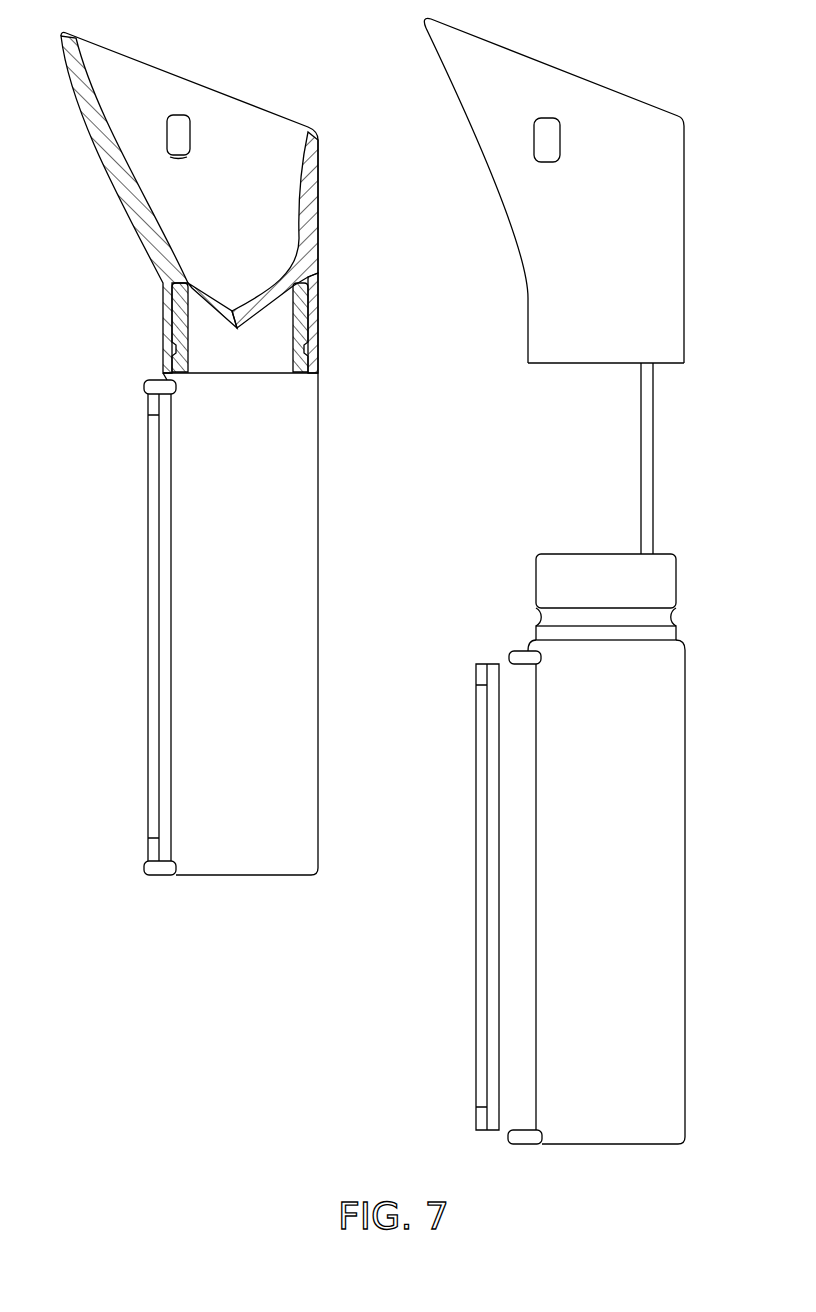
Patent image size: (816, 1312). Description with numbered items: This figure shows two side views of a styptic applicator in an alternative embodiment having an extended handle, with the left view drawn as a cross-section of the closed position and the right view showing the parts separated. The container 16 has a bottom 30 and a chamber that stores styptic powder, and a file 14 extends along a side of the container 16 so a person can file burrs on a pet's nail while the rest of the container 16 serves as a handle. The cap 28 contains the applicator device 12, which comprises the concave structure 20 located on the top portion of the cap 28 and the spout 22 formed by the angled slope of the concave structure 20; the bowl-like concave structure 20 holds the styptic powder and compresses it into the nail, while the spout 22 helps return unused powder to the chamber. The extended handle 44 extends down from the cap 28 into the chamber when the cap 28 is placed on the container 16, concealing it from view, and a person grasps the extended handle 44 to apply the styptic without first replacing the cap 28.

The applicator device 12 is at (108, 172).
The file 14 is at (148, 772).
The container 16 is at (318, 572).
The concave structure 20 is at (245, 122).
The spout 22 is at (518, 50).
The cap 28 is at (318, 320).
The bottom 30 is at (225, 876).
The extended handle 44 is at (653, 452).